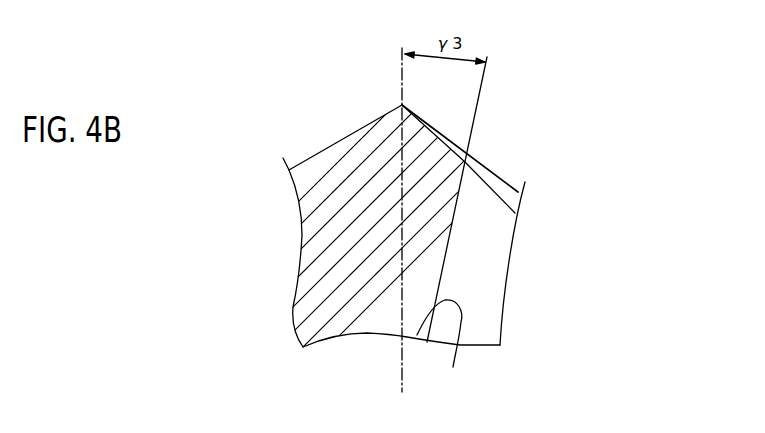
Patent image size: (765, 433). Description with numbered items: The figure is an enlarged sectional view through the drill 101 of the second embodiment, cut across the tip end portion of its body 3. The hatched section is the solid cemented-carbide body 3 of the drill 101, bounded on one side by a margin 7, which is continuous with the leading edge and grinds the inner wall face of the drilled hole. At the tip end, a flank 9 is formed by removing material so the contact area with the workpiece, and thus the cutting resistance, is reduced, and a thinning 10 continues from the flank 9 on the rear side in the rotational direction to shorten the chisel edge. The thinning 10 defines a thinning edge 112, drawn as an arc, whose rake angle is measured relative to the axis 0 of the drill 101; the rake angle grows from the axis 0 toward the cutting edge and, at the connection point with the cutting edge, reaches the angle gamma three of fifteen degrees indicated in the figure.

The drill 101 is at (525, 70).
The body 3 is at (513, 139).
The margin 7 is at (497, 0).
The flank 9 is at (519, 199).
The thinning 10 is at (497, 256).
The axis 0 is at (403, 97).
The thinning edge 112 is at (439, 346).